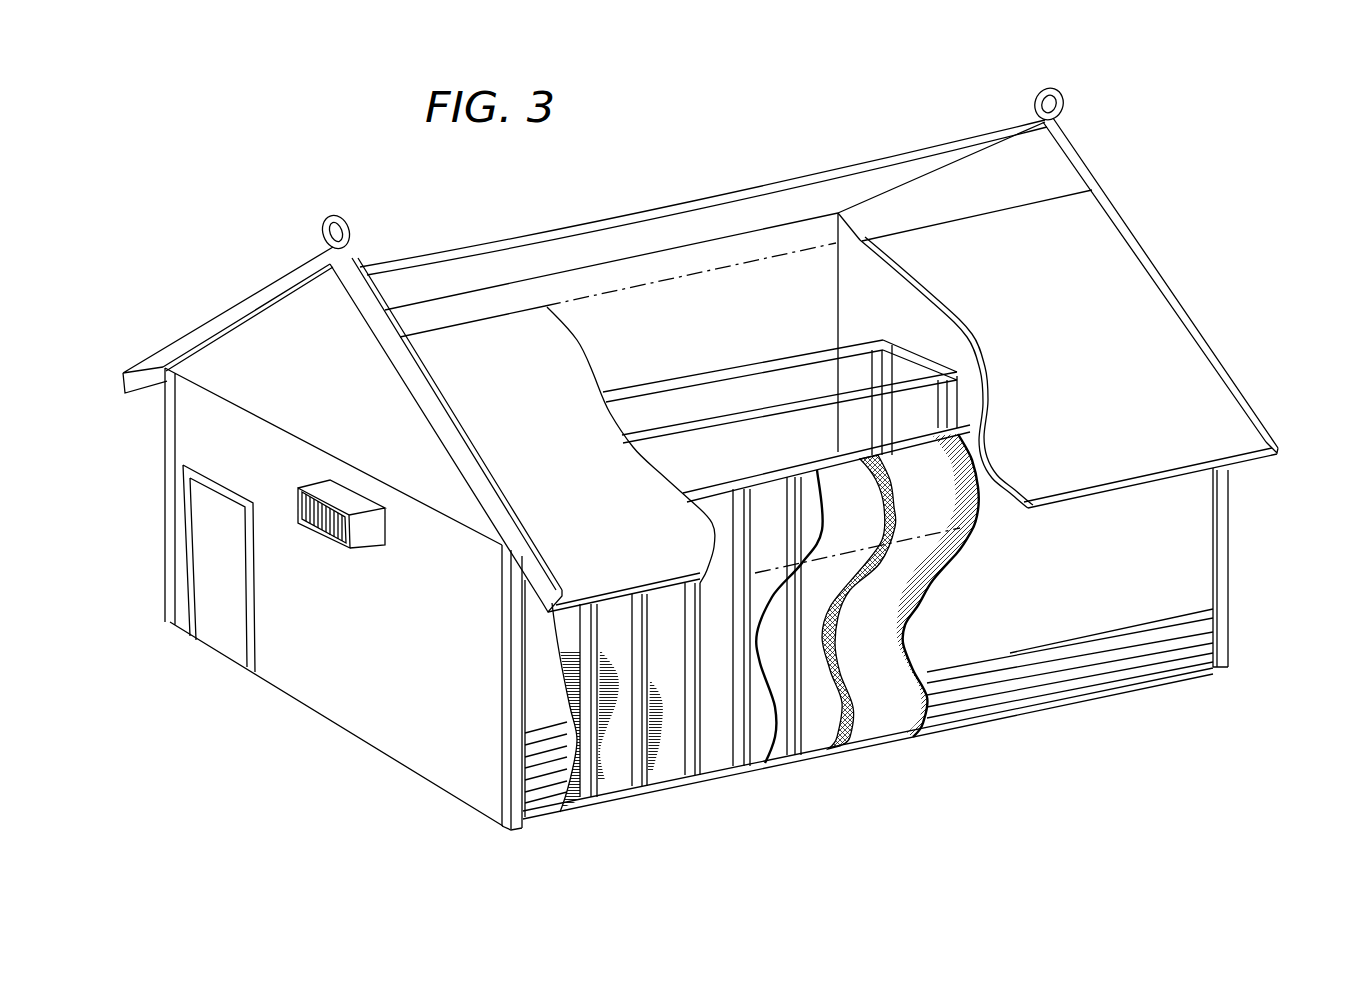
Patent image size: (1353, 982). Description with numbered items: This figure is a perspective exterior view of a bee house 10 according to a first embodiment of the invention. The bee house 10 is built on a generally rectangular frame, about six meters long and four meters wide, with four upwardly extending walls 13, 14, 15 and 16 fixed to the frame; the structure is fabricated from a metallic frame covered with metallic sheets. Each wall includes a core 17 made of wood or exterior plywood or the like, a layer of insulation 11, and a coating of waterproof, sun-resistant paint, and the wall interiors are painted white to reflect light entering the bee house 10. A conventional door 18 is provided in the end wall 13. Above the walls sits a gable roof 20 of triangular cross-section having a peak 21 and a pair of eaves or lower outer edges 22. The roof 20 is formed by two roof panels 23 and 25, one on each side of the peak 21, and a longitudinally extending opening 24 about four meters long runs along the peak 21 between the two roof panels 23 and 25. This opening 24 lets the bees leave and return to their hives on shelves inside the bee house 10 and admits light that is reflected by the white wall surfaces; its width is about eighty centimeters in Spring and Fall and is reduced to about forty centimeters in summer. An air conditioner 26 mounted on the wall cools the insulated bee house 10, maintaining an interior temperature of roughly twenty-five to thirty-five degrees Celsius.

The bee house 10 is at (262, 166).
The layer of insulation 11 is at (938, 504).
The end wall 13 is at (436, 687).
The wall 14 is at (1116, 554).
The wall 15 is at (899, 324).
The wall 16 is at (778, 324).
The core 17 is at (864, 532).
The conventional door 18 is at (220, 600).
The gable roof 20 is at (1185, 267).
The peak 21 is at (1040, 115).
The eaves 22 is at (150, 393).
The roof panel 23 is at (657, 205).
The longitudinally extending opening 24 is at (438, 278).
The roof panel 25 is at (1041, 282).
The air conditioner 26 is at (378, 505).